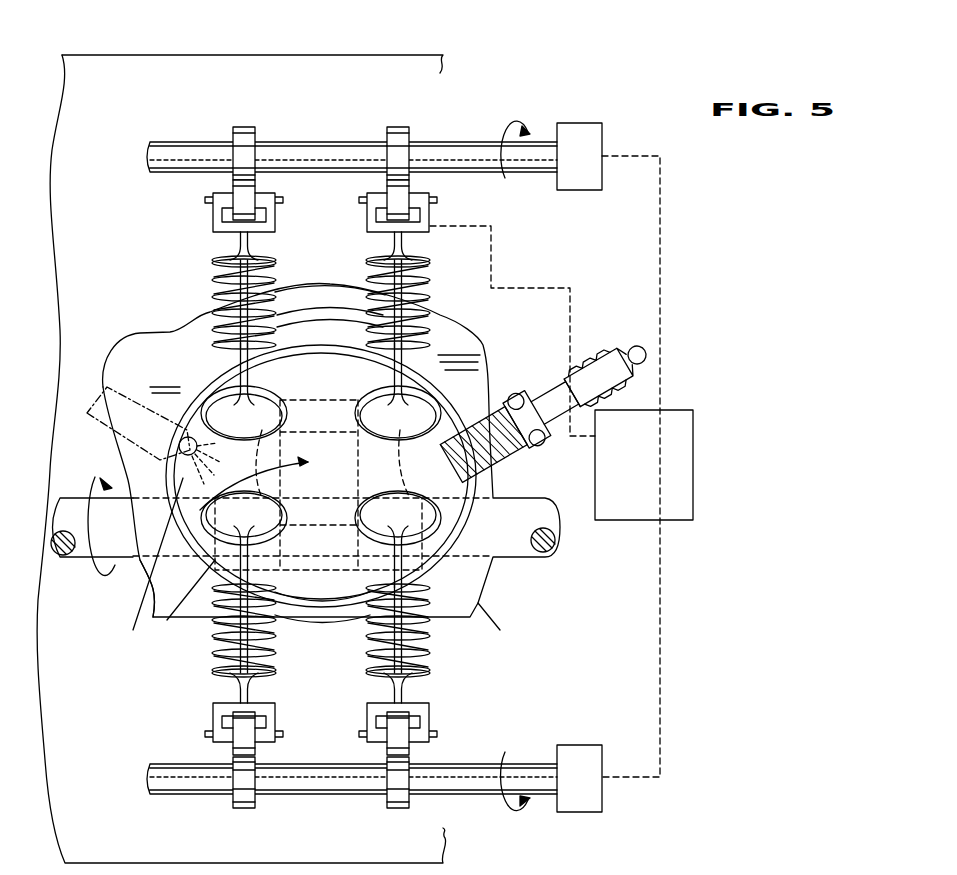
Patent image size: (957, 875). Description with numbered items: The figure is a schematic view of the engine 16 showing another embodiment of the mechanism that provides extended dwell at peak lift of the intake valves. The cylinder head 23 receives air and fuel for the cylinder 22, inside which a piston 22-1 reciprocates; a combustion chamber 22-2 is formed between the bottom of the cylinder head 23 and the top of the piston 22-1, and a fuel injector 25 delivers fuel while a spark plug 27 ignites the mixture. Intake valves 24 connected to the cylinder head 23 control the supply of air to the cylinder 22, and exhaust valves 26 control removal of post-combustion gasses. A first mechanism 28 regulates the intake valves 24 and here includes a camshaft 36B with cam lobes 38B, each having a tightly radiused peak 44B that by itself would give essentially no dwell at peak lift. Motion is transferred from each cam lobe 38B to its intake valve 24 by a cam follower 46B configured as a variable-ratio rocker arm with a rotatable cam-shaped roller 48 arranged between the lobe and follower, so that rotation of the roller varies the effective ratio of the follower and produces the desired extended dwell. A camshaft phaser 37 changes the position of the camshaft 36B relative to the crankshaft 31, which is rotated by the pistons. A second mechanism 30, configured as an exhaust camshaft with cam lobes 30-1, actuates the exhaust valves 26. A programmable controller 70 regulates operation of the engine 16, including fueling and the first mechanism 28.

The engine 16 is at (627, 237).
The cylinder 22 is at (187, 387).
The piston 22-1 is at (183, 478).
The combustion chamber 22-2 is at (165, 578).
The cylinder head 23 is at (106, 828).
The intake valve 24 is at (263, 410).
The fuel injector 25 is at (107, 430).
The exhaust valve 26 is at (263, 535).
The spark plug 27 is at (633, 346).
The first mechanism 28 is at (374, 150).
The second mechanism 30 is at (442, 773).
The cam lobe 30-1 is at (233, 797).
The crankshaft 31 is at (525, 540).
The camshaft 36B is at (328, 142).
The camshaft phaser 37 is at (591, 165).
The cam lobe 38B is at (410, 133).
The peak 44B is at (665, 873).
The cam follower 46B is at (428, 214).
The cam-shaped roller 48 is at (397, 200).
The programmable controller 70 is at (655, 473).